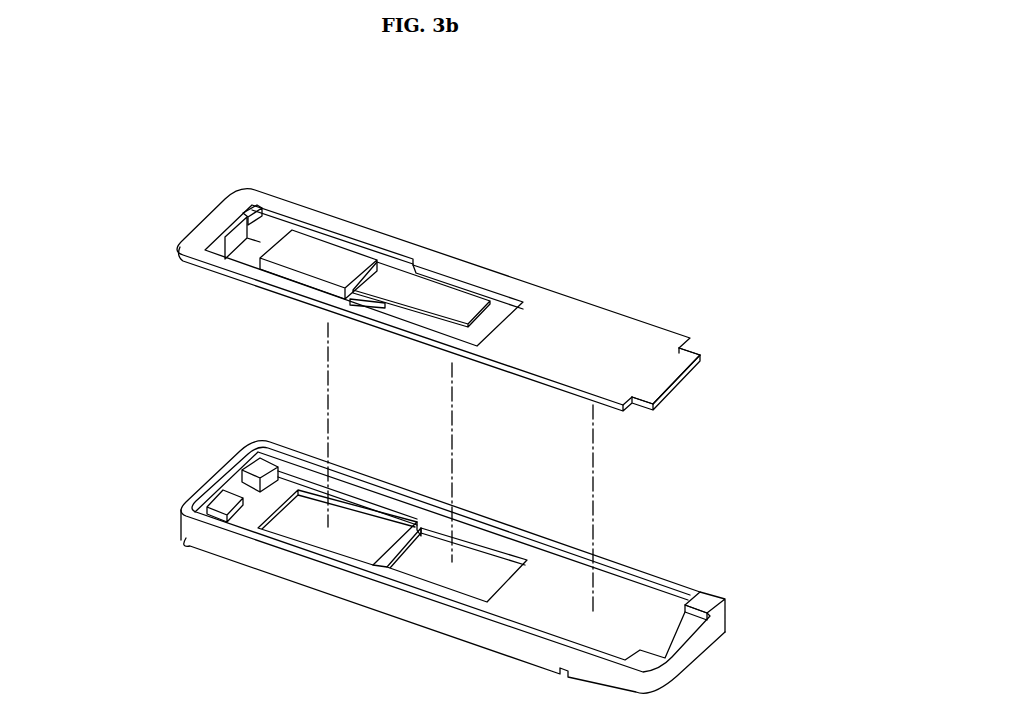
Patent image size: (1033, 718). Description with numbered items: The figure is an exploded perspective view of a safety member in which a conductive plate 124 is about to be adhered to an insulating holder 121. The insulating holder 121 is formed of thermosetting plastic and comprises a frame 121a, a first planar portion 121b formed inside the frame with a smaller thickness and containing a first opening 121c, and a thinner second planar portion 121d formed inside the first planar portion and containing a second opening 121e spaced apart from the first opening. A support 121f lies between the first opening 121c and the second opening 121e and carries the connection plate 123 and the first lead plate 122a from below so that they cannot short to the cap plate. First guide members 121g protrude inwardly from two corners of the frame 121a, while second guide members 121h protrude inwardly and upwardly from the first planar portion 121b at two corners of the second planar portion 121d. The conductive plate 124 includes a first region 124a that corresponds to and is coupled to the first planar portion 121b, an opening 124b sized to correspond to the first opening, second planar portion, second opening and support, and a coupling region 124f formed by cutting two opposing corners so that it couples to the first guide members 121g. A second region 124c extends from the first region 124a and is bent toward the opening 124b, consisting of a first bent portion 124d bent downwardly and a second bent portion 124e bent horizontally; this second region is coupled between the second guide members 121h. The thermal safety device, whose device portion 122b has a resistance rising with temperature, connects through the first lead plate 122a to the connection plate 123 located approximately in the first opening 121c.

The insulating holder 121 is at (166, 493).
The frame 121a is at (523, 530).
The first planar portion 121b is at (622, 590).
The first opening 121c is at (442, 572).
The second planar portion 121d is at (252, 500).
The second opening 121e is at (323, 542).
The support 121f is at (377, 562).
The first guide member 121g is at (710, 598).
The second guide member 121h is at (260, 463).
The first lead plate 122a is at (365, 304).
The device portion 122b is at (328, 252).
The connection plate 123 is at (463, 298).
The conductive plate 124 is at (188, 209).
The first region 124a is at (577, 318).
The opening 124b is at (428, 277).
The second region 124c is at (303, 133).
The first bent portion 124d is at (237, 238).
The second bent portion 124e is at (256, 243).
The coupling region 124f is at (692, 348).